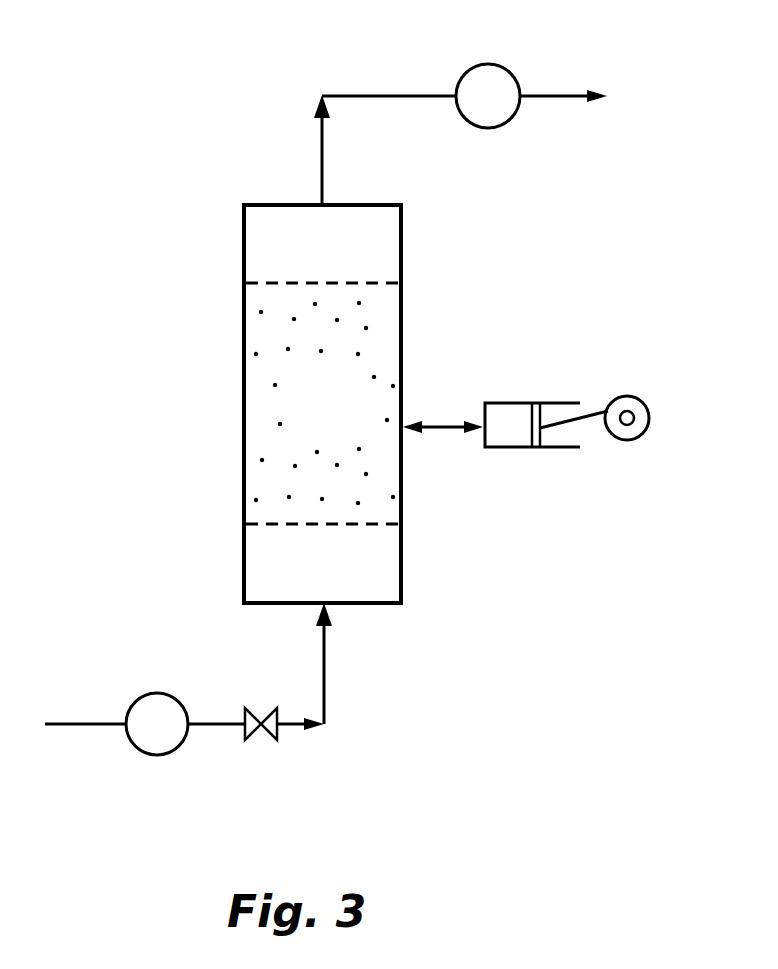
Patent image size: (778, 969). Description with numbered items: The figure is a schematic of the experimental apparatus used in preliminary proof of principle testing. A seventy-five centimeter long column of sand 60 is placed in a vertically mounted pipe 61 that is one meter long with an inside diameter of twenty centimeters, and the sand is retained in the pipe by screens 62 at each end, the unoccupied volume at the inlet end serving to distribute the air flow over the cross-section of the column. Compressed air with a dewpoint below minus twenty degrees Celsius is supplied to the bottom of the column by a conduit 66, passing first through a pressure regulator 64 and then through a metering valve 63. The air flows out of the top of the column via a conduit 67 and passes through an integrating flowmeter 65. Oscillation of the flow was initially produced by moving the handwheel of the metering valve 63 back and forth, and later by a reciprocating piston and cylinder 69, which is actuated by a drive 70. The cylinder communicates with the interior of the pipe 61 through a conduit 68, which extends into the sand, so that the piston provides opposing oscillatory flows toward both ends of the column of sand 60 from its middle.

The column of sand 60 is at (342, 415).
The pipe 61 is at (401, 232).
The screens 62 is at (272, 283).
The metering valve 63 is at (275, 743).
The pressure regulator 64 is at (147, 687).
The integrating flowmeter 65 is at (478, 57).
The conduit 66 is at (327, 660).
The conduit 67 is at (358, 93).
The conduit 68 is at (438, 423).
The reciprocating piston and cylinder 69 is at (510, 447).
The drive 70 is at (657, 418).